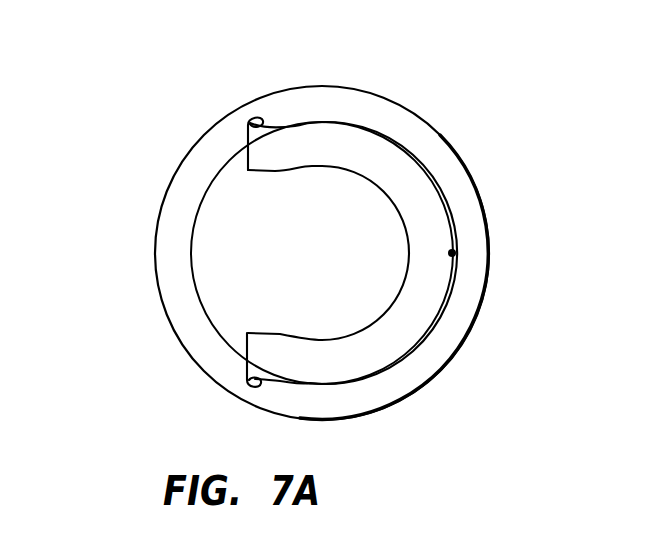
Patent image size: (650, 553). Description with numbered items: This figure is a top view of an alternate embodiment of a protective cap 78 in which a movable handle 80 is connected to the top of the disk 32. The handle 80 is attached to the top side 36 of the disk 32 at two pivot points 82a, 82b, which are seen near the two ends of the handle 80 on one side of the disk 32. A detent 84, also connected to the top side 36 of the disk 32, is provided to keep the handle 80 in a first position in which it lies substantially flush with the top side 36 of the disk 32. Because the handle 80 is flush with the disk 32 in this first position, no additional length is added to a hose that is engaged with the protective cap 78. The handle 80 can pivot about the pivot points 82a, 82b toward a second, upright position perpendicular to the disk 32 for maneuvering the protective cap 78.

The protective cap 78 is at (150, 119).
The disk 32 is at (440, 135).
The top side 36 is at (463, 208).
The detent 84 is at (452, 253).
The handle 80 is at (340, 169).
The pivot point 82a is at (256, 123).
The pivot point 82b is at (258, 386).